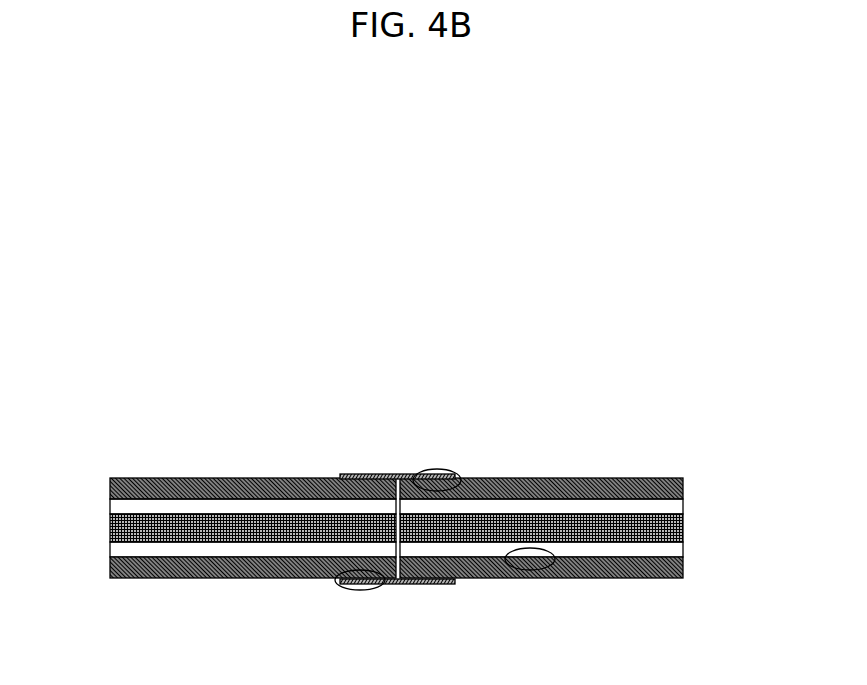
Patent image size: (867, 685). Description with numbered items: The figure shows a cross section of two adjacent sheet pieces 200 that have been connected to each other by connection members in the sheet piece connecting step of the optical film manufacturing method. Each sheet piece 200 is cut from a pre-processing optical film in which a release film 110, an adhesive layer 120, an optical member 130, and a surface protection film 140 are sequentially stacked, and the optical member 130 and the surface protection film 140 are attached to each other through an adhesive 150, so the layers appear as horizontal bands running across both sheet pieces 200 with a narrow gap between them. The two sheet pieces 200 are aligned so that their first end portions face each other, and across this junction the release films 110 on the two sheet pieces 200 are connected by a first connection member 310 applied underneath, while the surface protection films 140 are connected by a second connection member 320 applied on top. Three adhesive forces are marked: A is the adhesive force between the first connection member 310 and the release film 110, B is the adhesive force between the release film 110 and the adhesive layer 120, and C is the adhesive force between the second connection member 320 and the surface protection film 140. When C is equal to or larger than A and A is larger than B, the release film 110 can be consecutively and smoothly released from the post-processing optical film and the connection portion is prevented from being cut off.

The release film 110 is at (108, 572).
The adhesive layer 120 is at (108, 551).
The optical member 130 is at (108, 530).
The surface protection film 140 is at (108, 487).
The adhesive 150 is at (108, 507).
The sheet piece 200 is at (173, 464).
The first connection member 310 is at (395, 585).
The second connection member 320 is at (393, 473).
The adhesive force between first connection member and release film A is at (360, 590).
The adhesive force between release film and adhesive layer B is at (527, 570).
The adhesive force between second connection member and surface protection film C is at (437, 469).